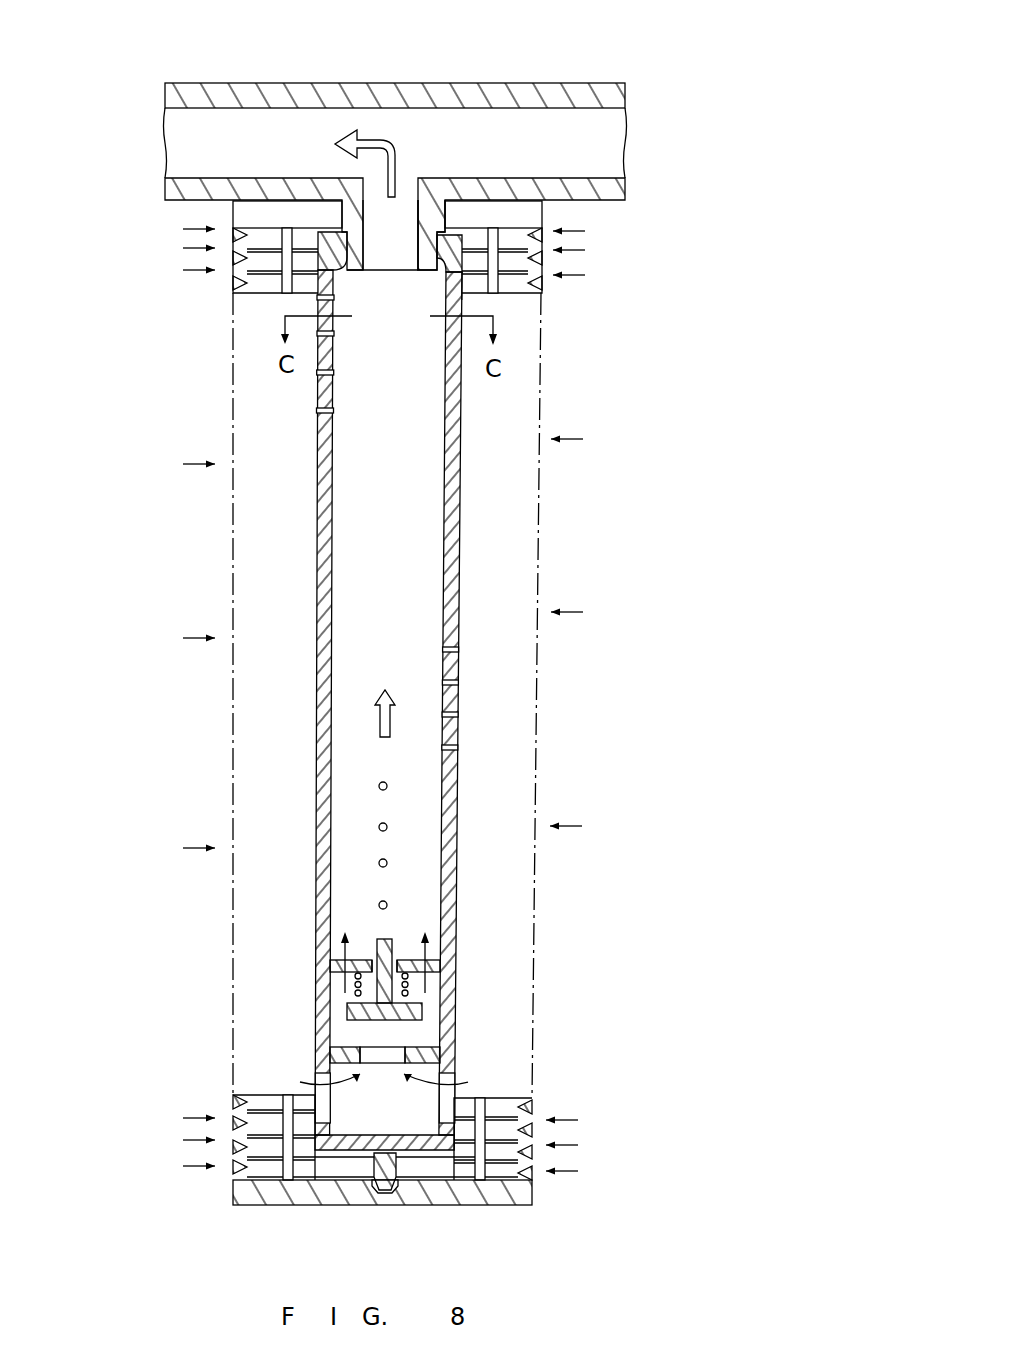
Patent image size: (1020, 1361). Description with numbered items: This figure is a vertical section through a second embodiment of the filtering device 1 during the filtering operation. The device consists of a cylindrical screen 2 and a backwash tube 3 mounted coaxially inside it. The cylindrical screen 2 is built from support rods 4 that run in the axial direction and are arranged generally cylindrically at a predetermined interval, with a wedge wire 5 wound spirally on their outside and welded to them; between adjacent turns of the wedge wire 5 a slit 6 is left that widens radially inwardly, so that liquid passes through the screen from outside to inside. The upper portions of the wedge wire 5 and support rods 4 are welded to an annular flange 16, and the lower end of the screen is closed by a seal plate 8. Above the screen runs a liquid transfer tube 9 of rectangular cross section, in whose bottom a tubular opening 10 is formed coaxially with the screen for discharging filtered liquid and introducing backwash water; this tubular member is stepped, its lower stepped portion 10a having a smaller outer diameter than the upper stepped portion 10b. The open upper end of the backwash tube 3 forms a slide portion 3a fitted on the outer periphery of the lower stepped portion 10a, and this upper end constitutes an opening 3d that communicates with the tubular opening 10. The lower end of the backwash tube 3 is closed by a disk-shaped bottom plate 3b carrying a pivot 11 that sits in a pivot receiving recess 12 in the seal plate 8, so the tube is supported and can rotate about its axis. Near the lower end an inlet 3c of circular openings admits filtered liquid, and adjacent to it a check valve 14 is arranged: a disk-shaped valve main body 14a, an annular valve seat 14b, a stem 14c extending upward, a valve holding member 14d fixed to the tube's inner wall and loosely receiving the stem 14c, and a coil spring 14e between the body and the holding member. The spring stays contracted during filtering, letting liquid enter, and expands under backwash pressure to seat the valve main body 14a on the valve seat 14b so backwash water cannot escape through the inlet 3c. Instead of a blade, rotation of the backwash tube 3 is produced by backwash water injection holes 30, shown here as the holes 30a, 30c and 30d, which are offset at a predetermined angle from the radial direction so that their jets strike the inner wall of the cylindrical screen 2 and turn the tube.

The filtering device 1 is at (607, 280).
The cylindrical screen 2 is at (539, 584).
The backwash tube 3 is at (460, 548).
The slide portion 3a is at (453, 242).
The bottom plate 3b is at (343, 1143).
The opening for filtered liquid 3c is at (460, 1085).
The opening for discharging filtered liquid and introducing backwash water 3d is at (449, 306).
The support rods 4 is at (285, 292).
The wedge wire 5 is at (233, 235).
The slit 6 is at (233, 272).
The seal plate 8 is at (524, 1190).
The liquid transfer tube 9 is at (283, 90).
The tubular opening 10 is at (404, 198).
The lower stepped portion 10a is at (400, 298).
The upper stepped portion 10b is at (432, 190).
The pivot 11 is at (395, 1186).
The pivot receiving recess 12 is at (373, 1188).
The check valve 14 is at (435, 1035).
The valve main body 14a is at (347, 1012).
The valve seat 14b is at (345, 1050).
The stem 14c is at (377, 940).
The valve holding member 14d is at (402, 960).
The coil spring 14e is at (413, 992).
The annular flange 16 is at (533, 213).
The backwash water injection holes 30 is at (215, 419).
The backwash water injection hole 30a is at (317, 410).
The backwash water injection hole 30c is at (458, 747).
The backwash water injection hole 30d is at (379, 905).